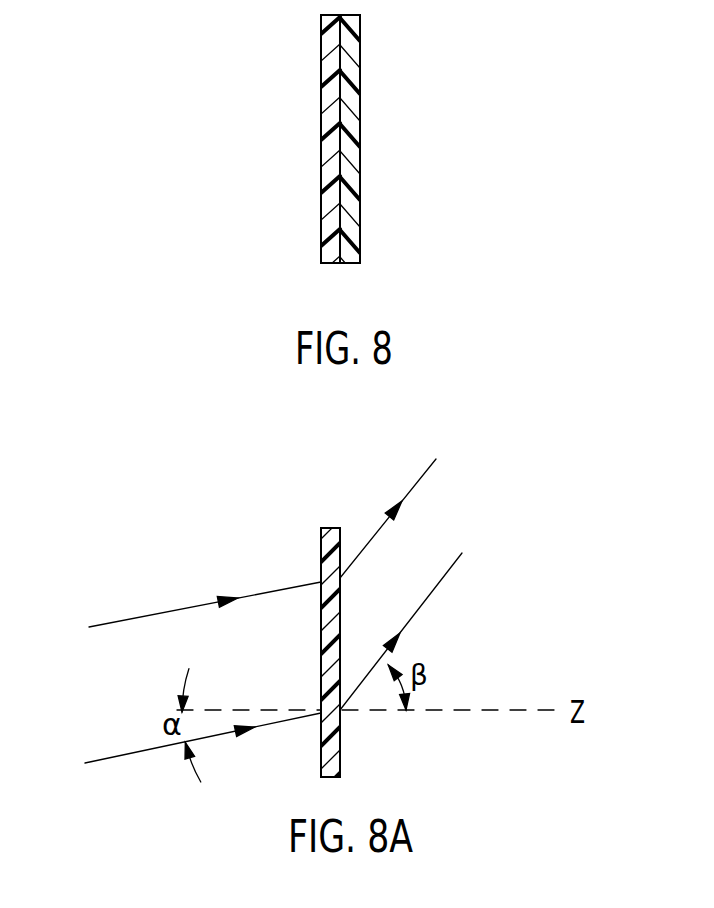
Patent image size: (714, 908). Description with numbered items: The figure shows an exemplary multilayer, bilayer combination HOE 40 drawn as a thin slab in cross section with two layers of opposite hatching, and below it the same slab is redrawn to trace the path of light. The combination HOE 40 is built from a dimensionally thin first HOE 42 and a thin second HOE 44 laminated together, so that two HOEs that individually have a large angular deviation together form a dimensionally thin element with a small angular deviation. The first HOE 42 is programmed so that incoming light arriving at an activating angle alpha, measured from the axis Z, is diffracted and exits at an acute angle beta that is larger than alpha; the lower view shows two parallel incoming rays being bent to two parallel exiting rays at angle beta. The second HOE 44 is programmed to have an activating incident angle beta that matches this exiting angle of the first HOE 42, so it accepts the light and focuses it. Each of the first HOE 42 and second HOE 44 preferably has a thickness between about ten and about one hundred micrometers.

In FIG. 8, the combination HOE 40 is at (336, 159).
In FIG. 8, the first HOE 42 is at (321, 97).
In FIG. 8A, the first HOE 42 is at (340, 765).
In FIG. 8, the second HOE 44 is at (360, 96).